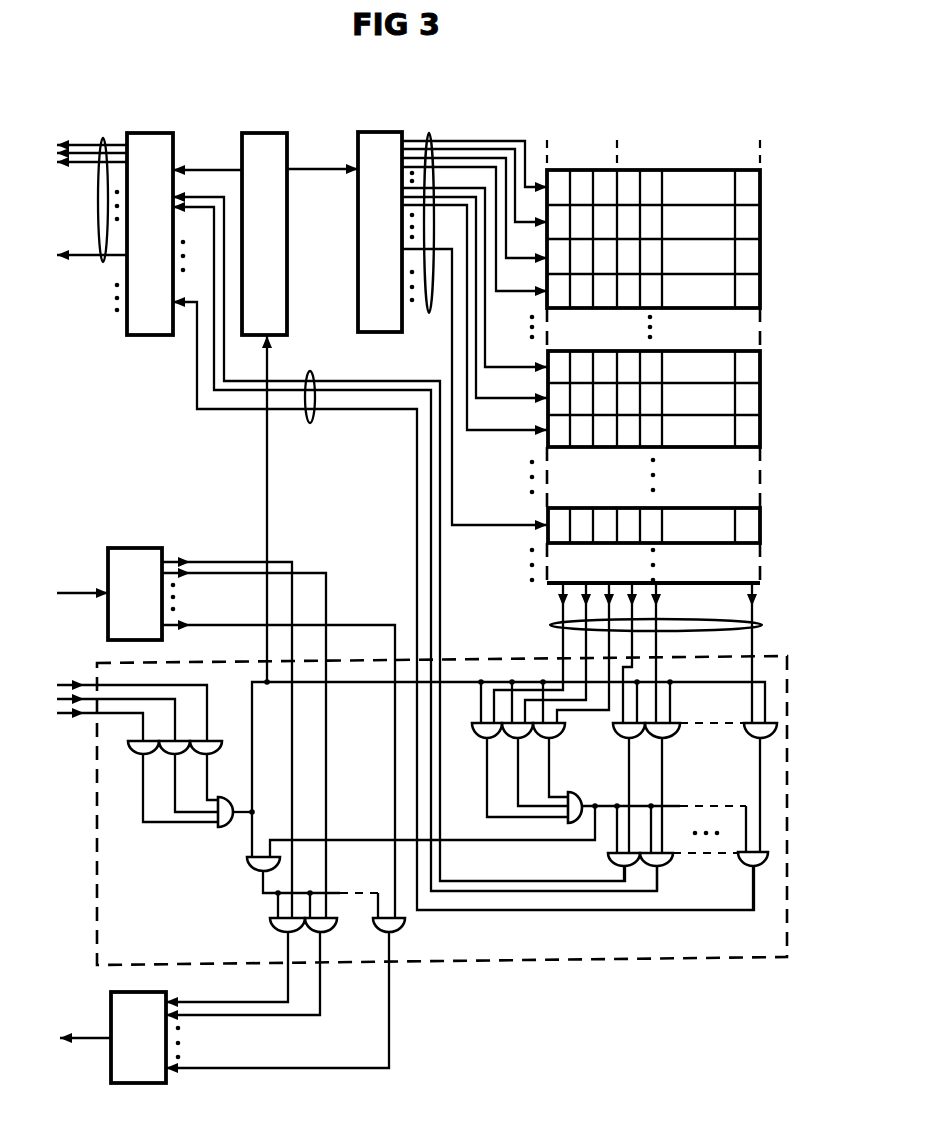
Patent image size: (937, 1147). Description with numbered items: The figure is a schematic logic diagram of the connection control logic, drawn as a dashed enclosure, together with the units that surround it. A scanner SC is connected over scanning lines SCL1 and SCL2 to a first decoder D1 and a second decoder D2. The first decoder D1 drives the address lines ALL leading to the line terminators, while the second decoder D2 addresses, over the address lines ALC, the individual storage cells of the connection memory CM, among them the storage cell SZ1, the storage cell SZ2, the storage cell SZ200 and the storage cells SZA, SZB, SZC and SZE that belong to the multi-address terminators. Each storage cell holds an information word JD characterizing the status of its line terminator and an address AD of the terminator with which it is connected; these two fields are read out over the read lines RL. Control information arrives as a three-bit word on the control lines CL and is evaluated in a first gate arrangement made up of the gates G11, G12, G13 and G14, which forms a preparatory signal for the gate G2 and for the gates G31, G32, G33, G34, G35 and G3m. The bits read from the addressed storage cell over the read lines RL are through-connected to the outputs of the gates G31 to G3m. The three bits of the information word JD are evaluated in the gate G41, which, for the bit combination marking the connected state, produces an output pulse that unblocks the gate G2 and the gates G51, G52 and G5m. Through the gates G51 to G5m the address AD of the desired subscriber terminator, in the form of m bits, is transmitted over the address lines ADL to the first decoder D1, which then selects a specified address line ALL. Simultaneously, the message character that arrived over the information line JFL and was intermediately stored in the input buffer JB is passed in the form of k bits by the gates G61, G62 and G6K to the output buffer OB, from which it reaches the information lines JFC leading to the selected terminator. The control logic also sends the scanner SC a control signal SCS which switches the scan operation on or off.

The address lines ALL is at (103, 140).
The first decoder D1 is at (150, 216).
The scanner SC is at (264, 216).
The scanning line SCL1 is at (226, 168).
The scanning line SCL2 is at (341, 168).
The second decoder D2 is at (386, 213).
The address lines ALC is at (431, 136).
The connection memory CM is at (677, 336).
The information word JD is at (582, 337).
The address AD is at (634, 121).
The storage cell SZ1 is at (673, 187).
The storage cell SZA is at (675, 221).
The storage cell SZB is at (675, 343).
The storage cell SZC is at (675, 290).
The storage cell SZE is at (675, 364).
The storage cell SZ2 is at (675, 396).
The storage cell SZ200 is at (686, 523).
The control signal SCS is at (269, 352).
The address lines ADL is at (310, 422).
The read lines RL is at (762, 625).
The information line JFL is at (92, 590).
The input buffer JB is at (251, 733).
The control lines CL is at (629, 978).
The gate G11 is at (136, 752).
The gate G12 is at (170, 755).
The gate G13 is at (205, 755).
The gate G14 is at (227, 830).
The gate G2 is at (247, 869).
The gate G61 is at (276, 933).
The gate G62 is at (330, 934).
The gate G6K is at (398, 934).
The gate G31 is at (484, 738).
The gate G32 is at (507, 740).
The gate G33 is at (556, 738).
The gate G34 is at (634, 738).
The gate G35 is at (672, 738).
The gate G3m is at (771, 737).
The gate G41 is at (575, 792).
The gate G51 is at (607, 862).
The gate G52 is at (667, 866).
The gate G5m is at (742, 868).
The output buffer OB is at (145, 1036).
The information lines JFC is at (85, 1022).